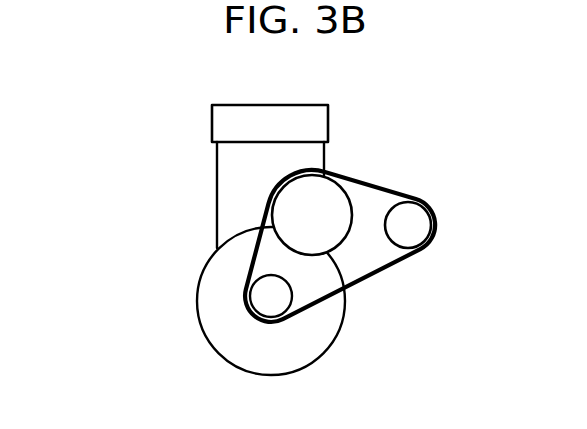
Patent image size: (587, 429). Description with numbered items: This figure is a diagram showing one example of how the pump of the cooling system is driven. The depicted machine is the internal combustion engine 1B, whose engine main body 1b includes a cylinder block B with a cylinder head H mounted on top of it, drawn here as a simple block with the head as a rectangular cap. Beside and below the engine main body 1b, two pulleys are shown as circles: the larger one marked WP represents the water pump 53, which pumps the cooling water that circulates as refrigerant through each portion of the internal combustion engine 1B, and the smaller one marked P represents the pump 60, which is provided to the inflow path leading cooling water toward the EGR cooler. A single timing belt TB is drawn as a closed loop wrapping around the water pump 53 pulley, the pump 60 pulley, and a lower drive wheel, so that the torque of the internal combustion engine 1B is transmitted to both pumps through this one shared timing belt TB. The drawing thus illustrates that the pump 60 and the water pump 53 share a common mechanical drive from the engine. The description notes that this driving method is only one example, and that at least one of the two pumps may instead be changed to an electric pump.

The internal combustion engine 1B is at (122, 139).
The cylinder head H is at (225, 115).
The cylinder block B is at (217, 178).
The engine main body 1b is at (334, 145).
The water pump 53 is at (290, 185).
The water pump WP is at (312, 215).
The pump 60 is at (415, 237).
The pump P is at (408, 225).
The timing belt TB is at (385, 270).